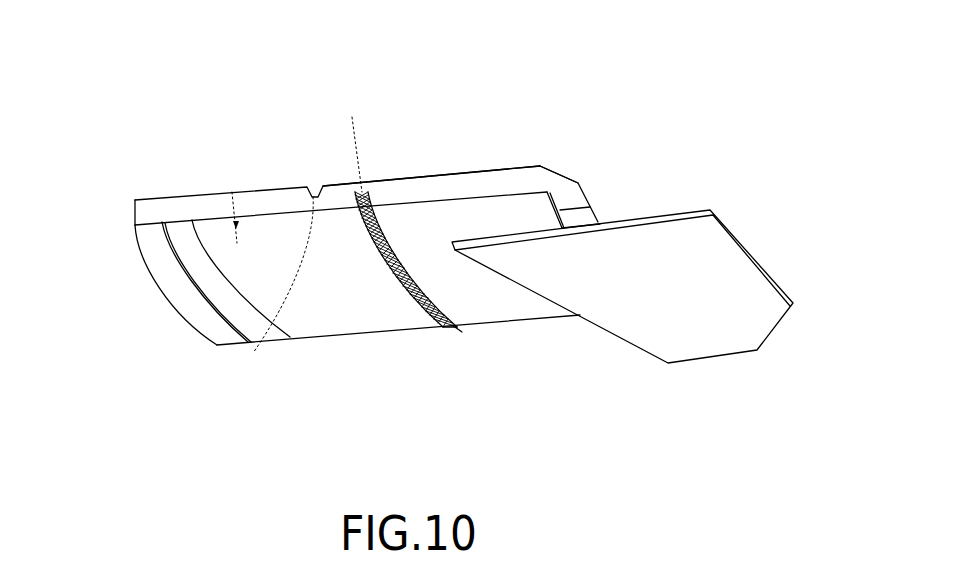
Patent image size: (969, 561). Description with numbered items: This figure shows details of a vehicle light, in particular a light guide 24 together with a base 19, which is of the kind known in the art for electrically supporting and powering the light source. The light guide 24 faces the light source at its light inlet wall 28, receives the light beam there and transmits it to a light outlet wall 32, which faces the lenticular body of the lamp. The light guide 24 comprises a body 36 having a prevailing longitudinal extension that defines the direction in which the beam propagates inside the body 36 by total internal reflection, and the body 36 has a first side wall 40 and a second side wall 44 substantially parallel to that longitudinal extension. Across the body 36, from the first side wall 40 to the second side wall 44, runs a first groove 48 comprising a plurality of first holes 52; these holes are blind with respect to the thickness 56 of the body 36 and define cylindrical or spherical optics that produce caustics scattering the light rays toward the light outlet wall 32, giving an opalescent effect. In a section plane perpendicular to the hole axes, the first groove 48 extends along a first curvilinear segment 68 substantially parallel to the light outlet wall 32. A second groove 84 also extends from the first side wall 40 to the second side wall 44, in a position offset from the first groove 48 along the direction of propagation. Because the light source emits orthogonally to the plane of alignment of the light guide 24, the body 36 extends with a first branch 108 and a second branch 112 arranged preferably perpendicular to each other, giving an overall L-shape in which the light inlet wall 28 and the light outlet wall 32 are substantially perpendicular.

The base 19 is at (732, 322).
The light guide 24 is at (377, 161).
The light inlet wall 28 is at (587, 218).
The light outlet wall 32 is at (173, 303).
The body 36 is at (262, 212).
The first side wall 40 is at (363, 338).
The second side wall 44 is at (457, 167).
The first groove 48 is at (455, 333).
The first holes 52 is at (447, 308).
The thickness 56 is at (232, 191).
The first curvilinear segment 68 is at (457, 330).
The second groove 84 is at (253, 353).
The first branch 108 is at (572, 202).
The second branch 112 is at (532, 165).